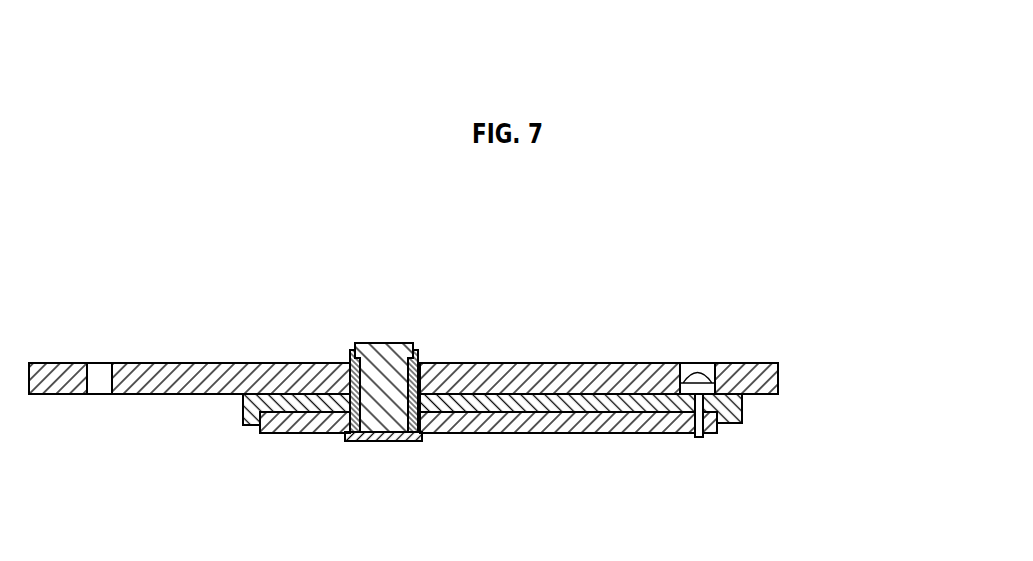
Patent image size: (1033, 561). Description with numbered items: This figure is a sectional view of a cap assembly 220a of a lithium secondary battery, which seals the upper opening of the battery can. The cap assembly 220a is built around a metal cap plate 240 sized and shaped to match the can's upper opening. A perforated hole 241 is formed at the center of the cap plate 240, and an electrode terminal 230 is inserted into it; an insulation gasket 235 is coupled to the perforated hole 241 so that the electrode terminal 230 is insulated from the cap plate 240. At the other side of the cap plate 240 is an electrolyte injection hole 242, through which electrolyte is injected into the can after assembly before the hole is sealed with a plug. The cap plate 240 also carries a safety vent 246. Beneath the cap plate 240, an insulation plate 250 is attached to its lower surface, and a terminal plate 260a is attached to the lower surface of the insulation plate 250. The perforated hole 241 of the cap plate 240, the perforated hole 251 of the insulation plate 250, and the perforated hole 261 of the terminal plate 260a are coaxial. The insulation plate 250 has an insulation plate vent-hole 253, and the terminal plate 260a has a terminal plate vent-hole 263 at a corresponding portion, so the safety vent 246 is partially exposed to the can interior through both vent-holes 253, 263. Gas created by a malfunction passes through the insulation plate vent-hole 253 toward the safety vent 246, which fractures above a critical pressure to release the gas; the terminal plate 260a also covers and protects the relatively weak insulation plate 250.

The cap assembly 220a is at (752, 293).
The cap plate 240 is at (767, 362).
The electrolyte injection hole 242 is at (99, 378).
The perforated hole 241 is at (352, 372).
The electrode terminal 230 is at (372, 343).
The insulation gasket 235 is at (416, 345).
The safety vent 246 is at (697, 375).
The insulation plate 250 is at (742, 405).
The terminal plate 260a is at (585, 433).
The insulation plate vent-hole 253 is at (692, 433).
The terminal plate vent-hole 263 is at (703, 433).
The perforated hole 261 is at (347, 433).
The perforated hole 251 is at (427, 433).